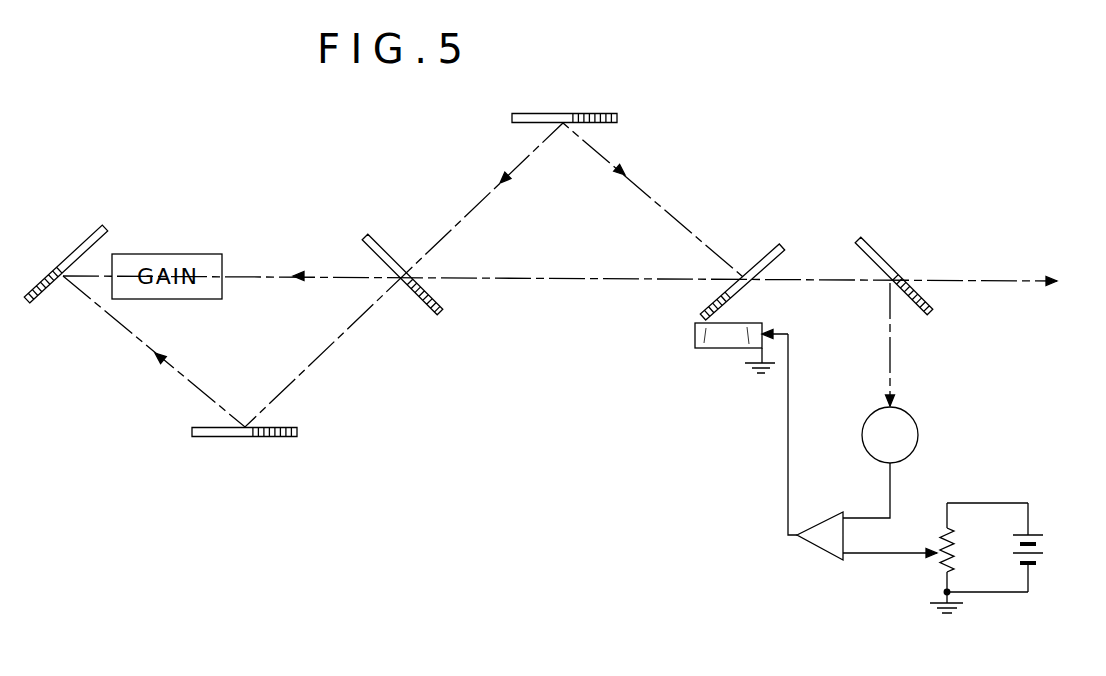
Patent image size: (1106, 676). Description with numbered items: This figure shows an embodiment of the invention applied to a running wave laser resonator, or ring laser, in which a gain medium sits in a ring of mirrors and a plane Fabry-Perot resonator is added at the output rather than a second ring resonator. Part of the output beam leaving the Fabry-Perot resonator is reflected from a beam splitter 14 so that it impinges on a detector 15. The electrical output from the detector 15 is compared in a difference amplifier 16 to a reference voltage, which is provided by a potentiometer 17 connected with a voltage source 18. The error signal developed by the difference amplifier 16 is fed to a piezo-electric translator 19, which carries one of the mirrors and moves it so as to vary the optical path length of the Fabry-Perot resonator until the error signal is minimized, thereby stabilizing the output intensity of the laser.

The beam splitter 14 is at (880, 256).
The detector 15 is at (917, 416).
The difference amplifier 16 is at (818, 518).
The potentiometer 17 is at (942, 528).
The voltage source 18 is at (1043, 534).
The piezo-electric translator 19 is at (737, 348).